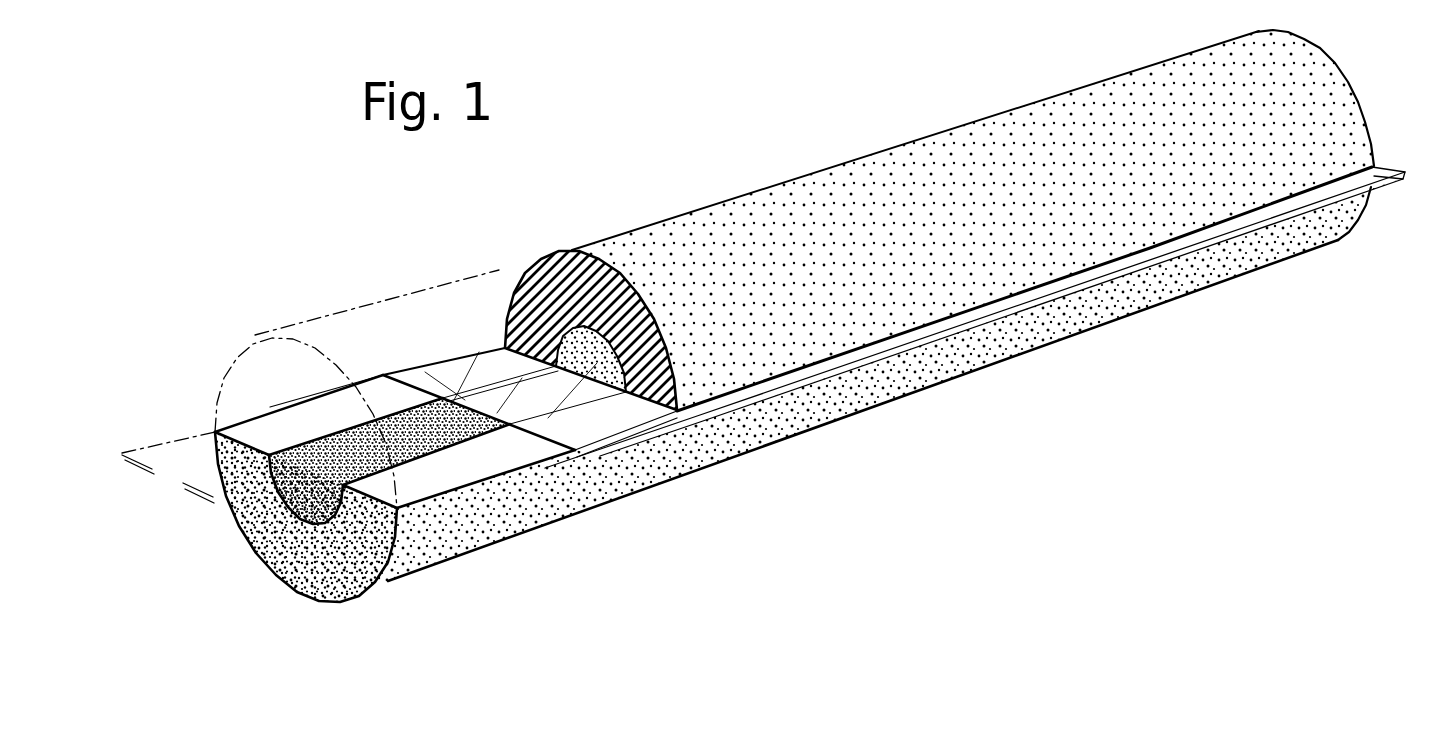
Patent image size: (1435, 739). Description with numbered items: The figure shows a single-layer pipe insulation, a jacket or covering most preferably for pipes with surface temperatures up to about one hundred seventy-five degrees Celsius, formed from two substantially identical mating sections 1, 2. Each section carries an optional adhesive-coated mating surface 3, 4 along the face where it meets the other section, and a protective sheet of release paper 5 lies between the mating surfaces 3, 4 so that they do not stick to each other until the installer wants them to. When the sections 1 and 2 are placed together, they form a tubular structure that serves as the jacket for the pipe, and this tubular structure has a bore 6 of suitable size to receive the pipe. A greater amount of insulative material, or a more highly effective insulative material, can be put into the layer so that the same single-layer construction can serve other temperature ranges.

The mating section 1 is at (897, 198).
The mating section 2 is at (1213, 253).
The adhesive-coated mating surface 3 is at (505, 355).
The adhesive-coated mating surface 4 is at (273, 432).
The protective sheet of release paper 5 is at (635, 410).
The bore 6 is at (590, 343).